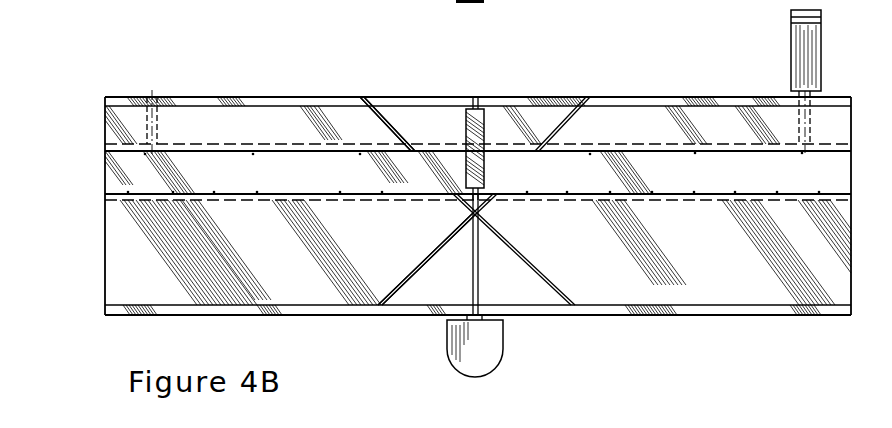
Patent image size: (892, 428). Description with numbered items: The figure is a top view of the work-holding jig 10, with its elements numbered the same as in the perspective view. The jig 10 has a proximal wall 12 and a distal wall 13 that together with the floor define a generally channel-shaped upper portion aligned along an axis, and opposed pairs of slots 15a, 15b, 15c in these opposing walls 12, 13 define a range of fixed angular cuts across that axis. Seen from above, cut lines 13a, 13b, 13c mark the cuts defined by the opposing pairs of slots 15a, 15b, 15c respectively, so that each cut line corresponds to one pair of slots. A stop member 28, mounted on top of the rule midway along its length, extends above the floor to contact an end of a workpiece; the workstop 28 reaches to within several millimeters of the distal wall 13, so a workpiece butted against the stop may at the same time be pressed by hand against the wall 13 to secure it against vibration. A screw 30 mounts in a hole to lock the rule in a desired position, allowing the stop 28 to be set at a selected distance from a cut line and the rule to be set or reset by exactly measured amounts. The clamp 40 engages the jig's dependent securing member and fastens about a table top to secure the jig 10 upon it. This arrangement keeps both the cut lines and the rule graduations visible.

The work-holding jig 10 is at (90, 254).
The proximal wall 12 is at (623, 307).
The distal wall 13 is at (662, 100).
The cut line 13a is at (393, 127).
The cut line 13b is at (473, 279).
The cut line 13c is at (433, 254).
The slot 15a is at (362, 96).
The slot 15b is at (476, 96).
The slot 15c is at (588, 96).
The stop member 28 is at (473, 117).
The screw 30 is at (797, 37).
The clamp 40 is at (492, 342).